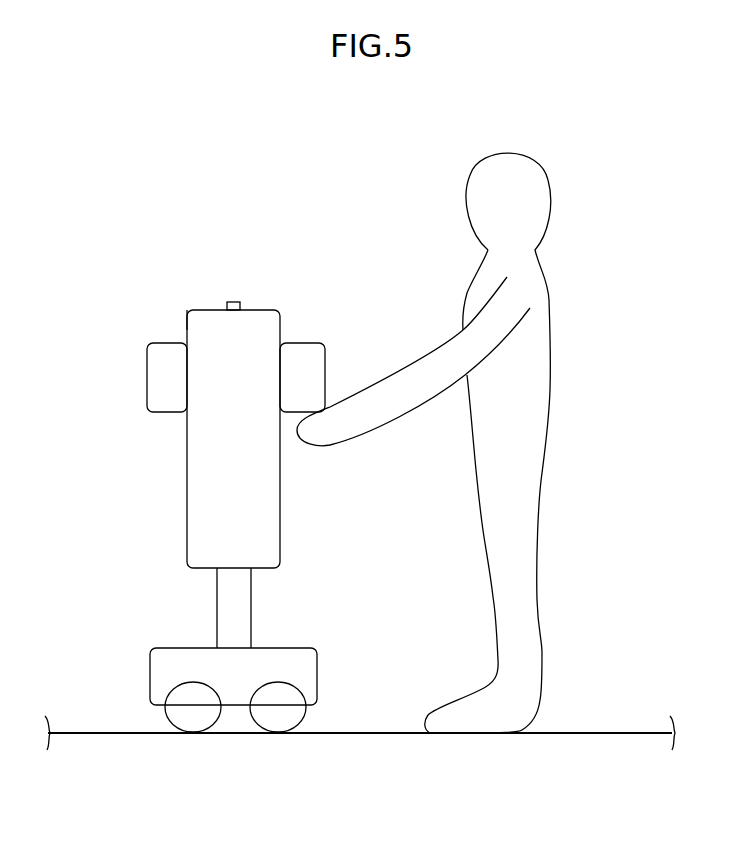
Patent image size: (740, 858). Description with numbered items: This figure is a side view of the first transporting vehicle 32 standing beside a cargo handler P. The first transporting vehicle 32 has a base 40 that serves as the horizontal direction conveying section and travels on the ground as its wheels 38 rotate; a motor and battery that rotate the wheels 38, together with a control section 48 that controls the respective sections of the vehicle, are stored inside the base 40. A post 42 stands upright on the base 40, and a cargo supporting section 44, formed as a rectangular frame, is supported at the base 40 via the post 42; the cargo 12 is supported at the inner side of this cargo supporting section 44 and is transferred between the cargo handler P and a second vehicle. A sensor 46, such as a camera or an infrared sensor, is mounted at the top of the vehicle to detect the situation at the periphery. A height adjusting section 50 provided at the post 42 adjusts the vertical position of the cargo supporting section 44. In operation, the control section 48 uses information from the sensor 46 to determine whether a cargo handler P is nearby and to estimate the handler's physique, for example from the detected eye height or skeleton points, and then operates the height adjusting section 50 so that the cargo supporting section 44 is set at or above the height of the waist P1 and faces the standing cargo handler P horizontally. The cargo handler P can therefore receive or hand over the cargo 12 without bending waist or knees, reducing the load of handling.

The cargo 12 is at (300, 343).
The first transporting vehicle 32 is at (187, 305).
The sensor 46 is at (233, 302).
The cargo supporting section 44 is at (187, 452).
The height adjusting section 50 is at (228, 592).
The post 42 is at (217, 620).
The base 40 is at (317, 681).
The control section 48 is at (168, 675).
The wheels 38 is at (278, 725).
The cargo handler P is at (461, 414).
The waist P1 is at (552, 396).